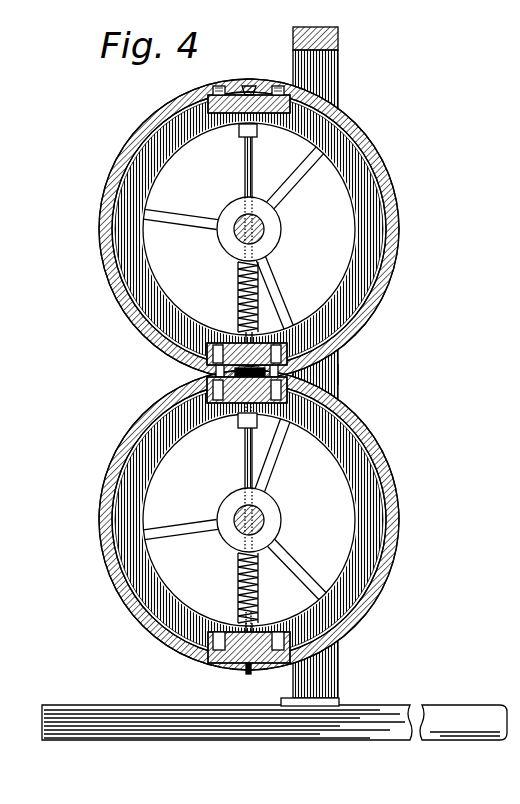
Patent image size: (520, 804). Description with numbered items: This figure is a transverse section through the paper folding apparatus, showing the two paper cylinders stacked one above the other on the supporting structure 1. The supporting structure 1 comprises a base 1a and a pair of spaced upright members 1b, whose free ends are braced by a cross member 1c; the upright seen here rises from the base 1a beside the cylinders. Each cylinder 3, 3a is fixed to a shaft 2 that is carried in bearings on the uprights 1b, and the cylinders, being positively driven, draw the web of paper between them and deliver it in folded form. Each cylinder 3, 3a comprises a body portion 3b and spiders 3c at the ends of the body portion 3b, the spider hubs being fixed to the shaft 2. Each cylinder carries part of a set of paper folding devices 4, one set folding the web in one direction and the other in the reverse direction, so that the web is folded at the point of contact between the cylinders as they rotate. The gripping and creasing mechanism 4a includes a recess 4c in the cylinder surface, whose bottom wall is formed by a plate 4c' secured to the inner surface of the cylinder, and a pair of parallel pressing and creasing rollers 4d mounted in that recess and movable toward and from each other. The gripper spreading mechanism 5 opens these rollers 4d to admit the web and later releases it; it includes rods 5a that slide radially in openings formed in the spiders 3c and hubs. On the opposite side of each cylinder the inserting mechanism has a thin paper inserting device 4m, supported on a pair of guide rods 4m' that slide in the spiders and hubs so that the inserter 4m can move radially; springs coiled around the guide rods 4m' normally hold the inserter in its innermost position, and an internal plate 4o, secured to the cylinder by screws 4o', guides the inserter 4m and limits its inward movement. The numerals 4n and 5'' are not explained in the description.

The supporting structure 1 is at (324, 378).
The base 1a is at (353, 705).
The spaced members 1b is at (340, 366).
The cross member 1c is at (340, 38).
The shaft 2 is at (262, 233).
The paper roller or cylinder 3 is at (97, 228).
The paper roller or cylinder 3a is at (98, 519).
The body portion 3b is at (397, 192).
The spider 3c is at (358, 226).
The set of paper folding devices 4 is at (205, 372).
The gripping and creasing mechanism 4a is at (245, 88).
The recess 4c is at (242, 126).
The plate 4c' is at (255, 401).
The pressing and creasing devices 4d is at (226, 91).
The paper inserting device 4m is at (221, 494).
The guide rods 4m' is at (215, 599).
The clamp bolt stem 4n is at (232, 407).
The plate 4o is at (269, 486).
The screws 4o' is at (211, 526).
The gripper spreading mechanism 5 is at (239, 285).
The rods 5a is at (253, 173).
The spring 5'' is at (268, 447).